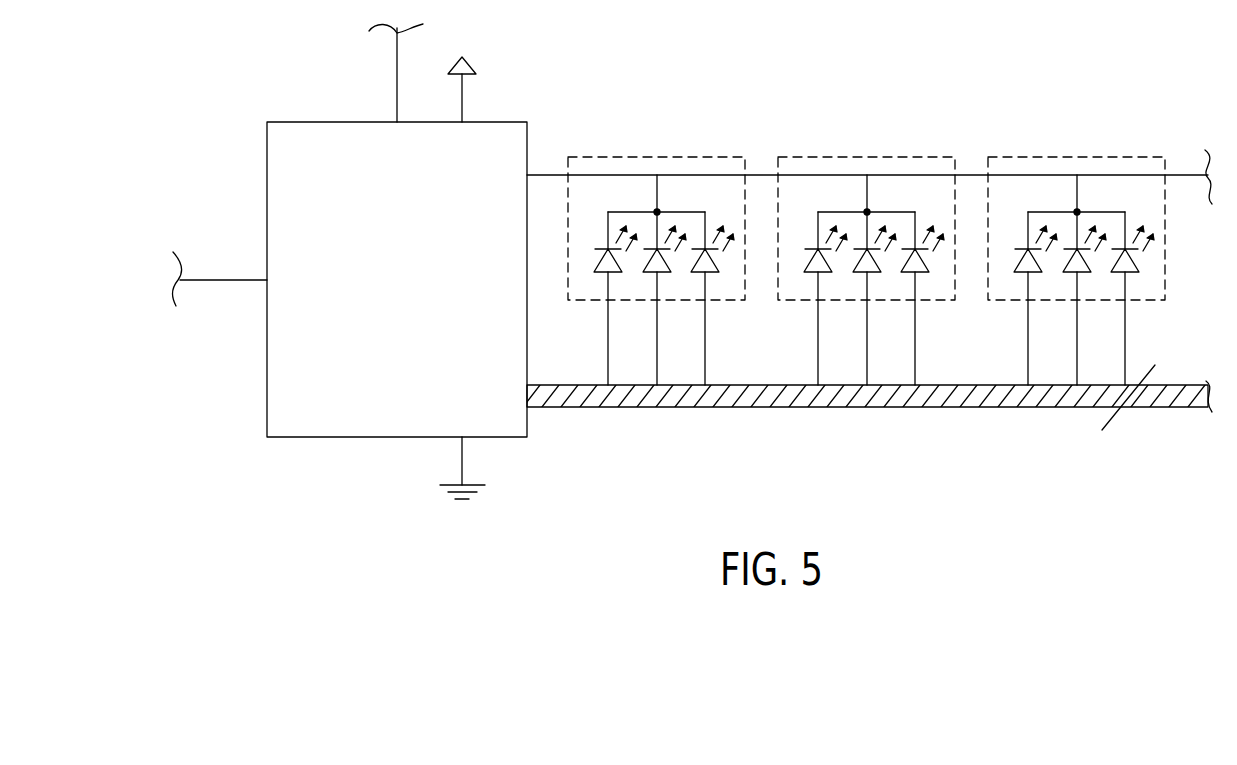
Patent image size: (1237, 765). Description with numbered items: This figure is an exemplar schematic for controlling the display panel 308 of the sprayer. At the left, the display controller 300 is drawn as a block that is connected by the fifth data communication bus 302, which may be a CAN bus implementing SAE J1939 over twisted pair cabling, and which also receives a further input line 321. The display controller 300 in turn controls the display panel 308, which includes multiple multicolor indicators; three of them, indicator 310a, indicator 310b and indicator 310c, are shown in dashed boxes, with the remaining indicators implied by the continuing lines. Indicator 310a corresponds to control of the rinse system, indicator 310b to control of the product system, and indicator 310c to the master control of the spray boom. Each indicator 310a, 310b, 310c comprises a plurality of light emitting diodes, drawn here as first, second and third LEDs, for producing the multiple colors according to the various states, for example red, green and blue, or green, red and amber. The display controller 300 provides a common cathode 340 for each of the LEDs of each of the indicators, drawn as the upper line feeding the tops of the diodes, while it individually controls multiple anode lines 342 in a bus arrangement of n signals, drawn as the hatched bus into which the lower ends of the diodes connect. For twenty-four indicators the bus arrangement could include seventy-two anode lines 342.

The display controller 300 is at (407, 296).
The fifth data communication bus 302 is at (396, 70).
The display panel 308 is at (866, 199).
The indicator 310a is at (681, 147).
The indicator 310b is at (891, 147).
The indicator 310c is at (1101, 147).
The control signal input 321 is at (247, 278).
The common cathode 340 is at (548, 174).
The anode lines 342 is at (586, 408).
The n signals n is at (1120, 405).